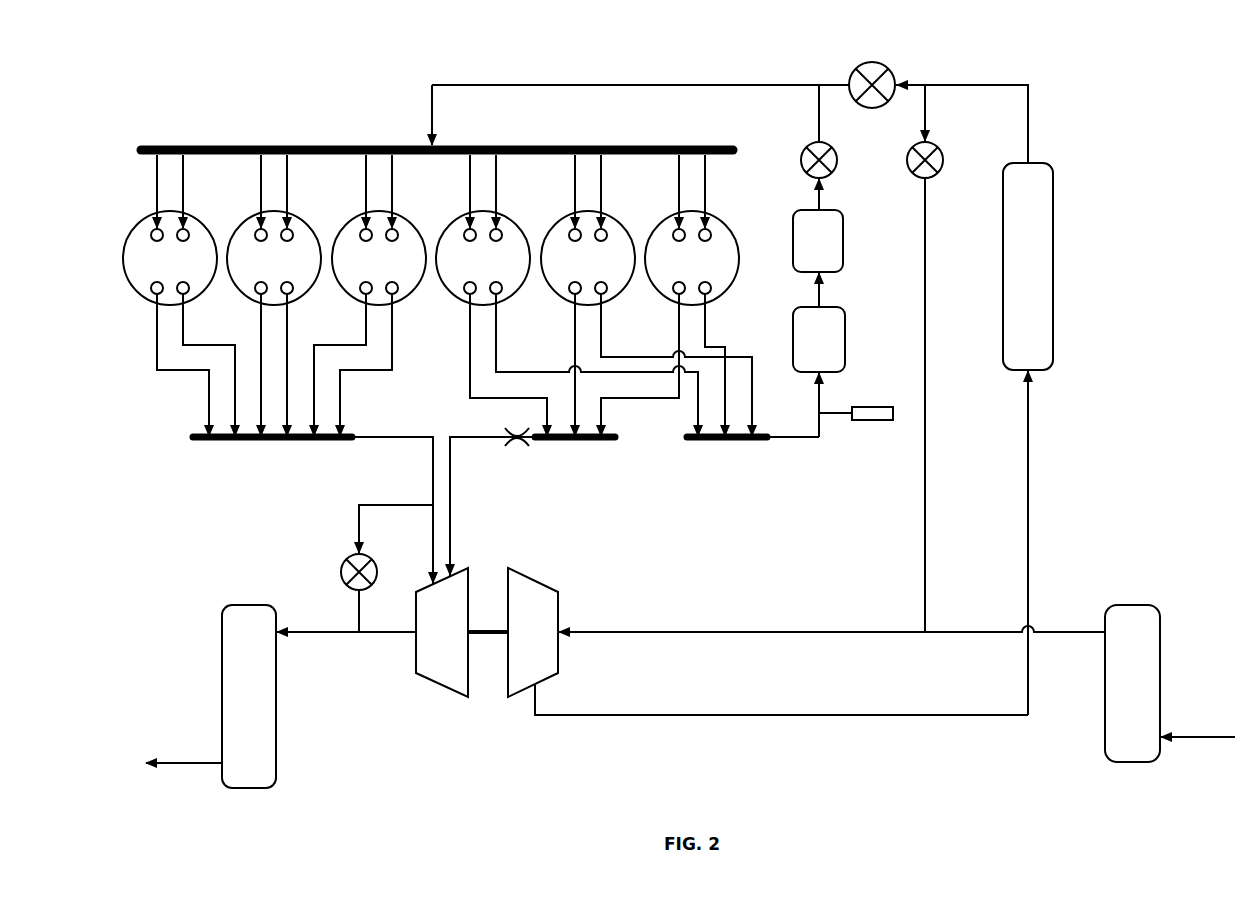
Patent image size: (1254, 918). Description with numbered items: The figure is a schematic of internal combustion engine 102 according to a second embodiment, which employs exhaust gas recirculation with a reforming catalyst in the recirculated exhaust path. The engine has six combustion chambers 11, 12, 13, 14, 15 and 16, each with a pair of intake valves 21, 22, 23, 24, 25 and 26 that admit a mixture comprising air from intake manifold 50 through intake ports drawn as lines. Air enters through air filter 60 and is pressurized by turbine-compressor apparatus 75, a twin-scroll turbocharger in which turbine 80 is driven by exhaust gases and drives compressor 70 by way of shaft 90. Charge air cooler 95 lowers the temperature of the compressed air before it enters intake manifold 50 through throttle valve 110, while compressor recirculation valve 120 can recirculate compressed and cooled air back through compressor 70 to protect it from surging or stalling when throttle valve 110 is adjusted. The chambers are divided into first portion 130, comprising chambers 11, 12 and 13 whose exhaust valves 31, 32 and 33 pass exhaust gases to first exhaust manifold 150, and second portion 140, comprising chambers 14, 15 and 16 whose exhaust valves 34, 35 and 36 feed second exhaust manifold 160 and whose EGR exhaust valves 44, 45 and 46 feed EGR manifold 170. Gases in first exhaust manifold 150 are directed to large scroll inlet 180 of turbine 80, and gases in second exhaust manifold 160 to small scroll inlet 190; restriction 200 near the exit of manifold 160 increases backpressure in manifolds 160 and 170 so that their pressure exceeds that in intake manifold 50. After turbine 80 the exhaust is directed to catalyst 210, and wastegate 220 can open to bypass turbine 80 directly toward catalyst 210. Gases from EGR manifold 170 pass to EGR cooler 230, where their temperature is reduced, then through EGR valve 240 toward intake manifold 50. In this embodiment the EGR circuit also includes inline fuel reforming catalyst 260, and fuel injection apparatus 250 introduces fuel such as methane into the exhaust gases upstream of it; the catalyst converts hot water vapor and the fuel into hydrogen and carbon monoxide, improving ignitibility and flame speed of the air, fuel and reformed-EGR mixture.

The engine 102 is at (132, 122).
The intake manifold 50 is at (216, 144).
The combustion chamber 11 is at (159, 273).
The combustion chamber 12 is at (263, 273).
The combustion chamber 13 is at (368, 273).
The combustion chamber 14 is at (472, 273).
The combustion chamber 15 is at (577, 273).
The combustion chamber 16 is at (681, 273).
The intake valves 21 is at (174, 219).
The intake valves 22 is at (278, 219).
The intake valves 23 is at (383, 219).
The intake valves 24 is at (487, 219).
The intake valves 25 is at (592, 219).
The intake valves 26 is at (696, 219).
The exhaust valves 31 is at (167, 302).
The exhaust valves 32 is at (271, 302).
The exhaust valves 33 is at (376, 302).
The exhaust valve 34 is at (466, 298).
The exhaust valve 35 is at (571, 298).
The exhaust valve 36 is at (675, 298).
The EGR exhaust valve 44 is at (500, 298).
The EGR exhaust valve 45 is at (605, 298).
The EGR exhaust valve 46 is at (709, 298).
The first portion 130 is at (403, 363).
The second portion 140 is at (460, 340).
The first exhaust manifold 150 is at (228, 446).
The second exhaust manifold 160 is at (565, 446).
The EGR manifold 170 is at (720, 446).
The large scroll inlet 180 is at (426, 578).
The small scroll inlet 190 is at (470, 582).
The restriction 200 is at (508, 452).
The wastegate 220 is at (342, 562).
The turbine 80 is at (430, 642).
The shaft 90 is at (490, 636).
The compressor 70 is at (521, 642).
The turbine-compressor apparatus 75 is at (460, 760).
The catalyst 210 is at (232, 705).
The air filter 60 is at (1121, 695).
The charge air cooler 95 is at (1017, 278).
The throttle valve 110 is at (862, 108).
The compressor recirculation valve 120 is at (906, 172).
The EGR valve 240 is at (802, 162).
The EGR cooler 230 is at (803, 251).
The fuel reforming catalyst 260 is at (804, 350).
The fuel injection apparatus 250 is at (876, 422).